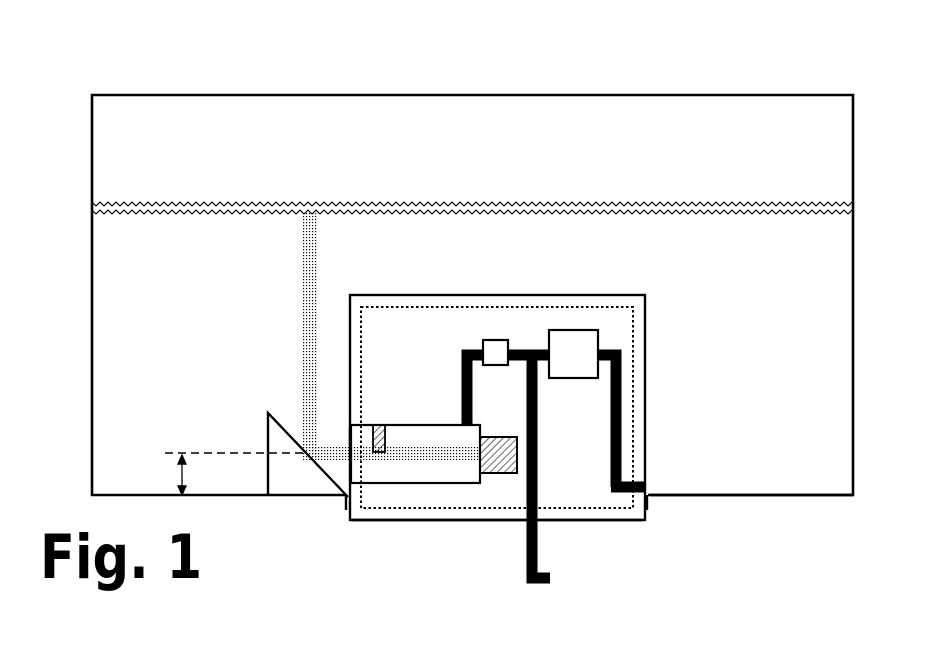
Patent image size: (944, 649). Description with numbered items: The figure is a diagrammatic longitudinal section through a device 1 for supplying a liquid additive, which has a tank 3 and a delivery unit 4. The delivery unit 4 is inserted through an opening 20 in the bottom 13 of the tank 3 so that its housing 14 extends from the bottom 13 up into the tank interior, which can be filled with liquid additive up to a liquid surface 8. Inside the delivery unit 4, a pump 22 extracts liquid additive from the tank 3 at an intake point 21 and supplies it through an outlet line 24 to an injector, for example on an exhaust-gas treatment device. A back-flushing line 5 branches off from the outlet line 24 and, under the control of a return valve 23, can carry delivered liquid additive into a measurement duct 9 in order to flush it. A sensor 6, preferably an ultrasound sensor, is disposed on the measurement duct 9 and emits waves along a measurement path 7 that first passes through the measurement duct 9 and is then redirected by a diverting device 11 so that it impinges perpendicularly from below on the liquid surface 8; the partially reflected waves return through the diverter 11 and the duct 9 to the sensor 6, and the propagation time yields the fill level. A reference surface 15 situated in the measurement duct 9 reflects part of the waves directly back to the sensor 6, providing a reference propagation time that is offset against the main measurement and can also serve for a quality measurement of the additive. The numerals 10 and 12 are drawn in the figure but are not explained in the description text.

The device 1 is at (88, 60).
The tank 3 is at (655, 95).
The delivery unit 4 is at (645, 520).
The back-flushing line 5 is at (463, 362).
The sensor 6 is at (492, 475).
The measurement path 7 is at (306, 325).
The liquid surface 8 is at (500, 205).
The measurement duct 9 is at (415, 485).
The wall opening 10 is at (347, 437).
The diverting device 11 is at (290, 428).
The height 12 is at (176, 478).
The bottom 13 is at (821, 488).
The housing 14 is at (620, 522).
The reference surface 15 is at (386, 437).
The opening 20 is at (650, 500).
The intake point 21 is at (645, 485).
The pump 22 is at (560, 330).
The return valve 23 is at (492, 348).
The outlet line 24 is at (540, 553).